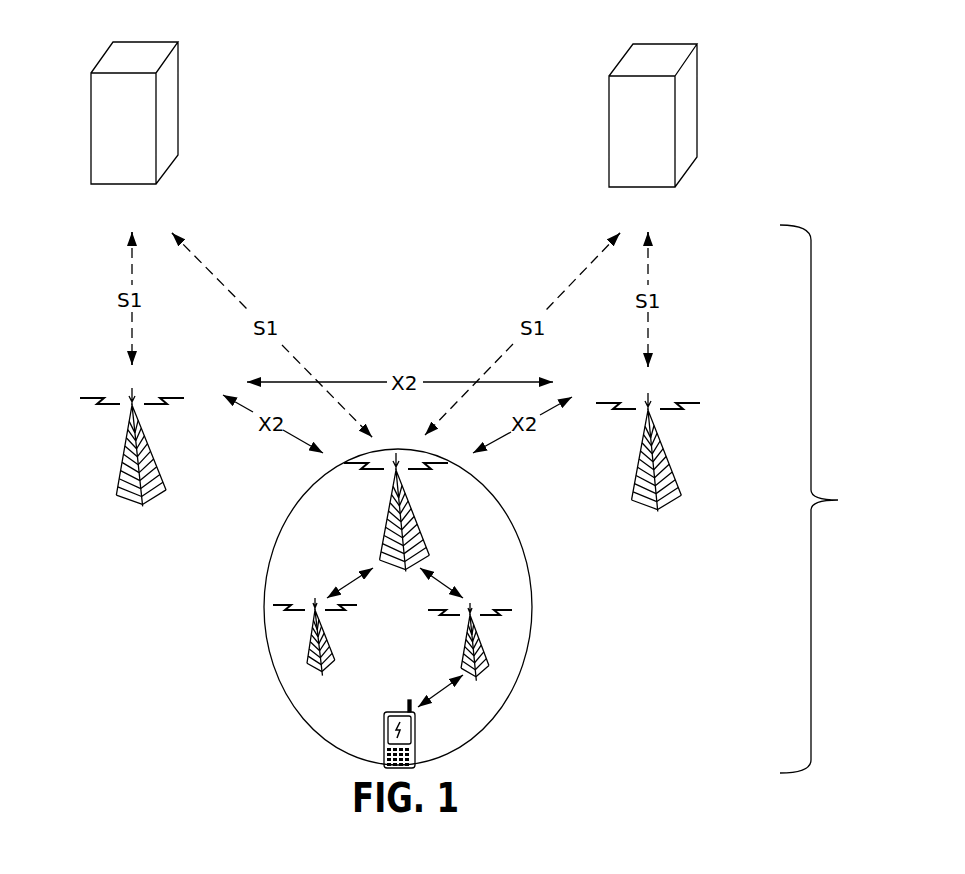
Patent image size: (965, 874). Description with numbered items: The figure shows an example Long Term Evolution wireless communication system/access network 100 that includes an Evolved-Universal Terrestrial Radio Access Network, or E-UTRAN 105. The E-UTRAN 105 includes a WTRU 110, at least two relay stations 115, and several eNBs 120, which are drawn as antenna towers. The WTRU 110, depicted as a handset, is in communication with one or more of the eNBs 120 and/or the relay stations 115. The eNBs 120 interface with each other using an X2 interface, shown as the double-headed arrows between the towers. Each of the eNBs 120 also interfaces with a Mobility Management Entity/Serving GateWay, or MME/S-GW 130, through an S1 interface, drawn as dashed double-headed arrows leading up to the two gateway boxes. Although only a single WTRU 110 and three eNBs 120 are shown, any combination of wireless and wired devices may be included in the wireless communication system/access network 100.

The wireless communication system/access network 100 is at (878, 56).
The Evolved-Universal Terrestrial Radio Access Network (E-UTRAN) 105 is at (862, 499).
The WTRU 110 is at (415, 740).
The relay stations 115 is at (553, 627).
The eNBs 120 is at (663, 575).
The Mobility Management Entity (MME)/Serving GateWay (S-GW) 130 is at (178, 107).